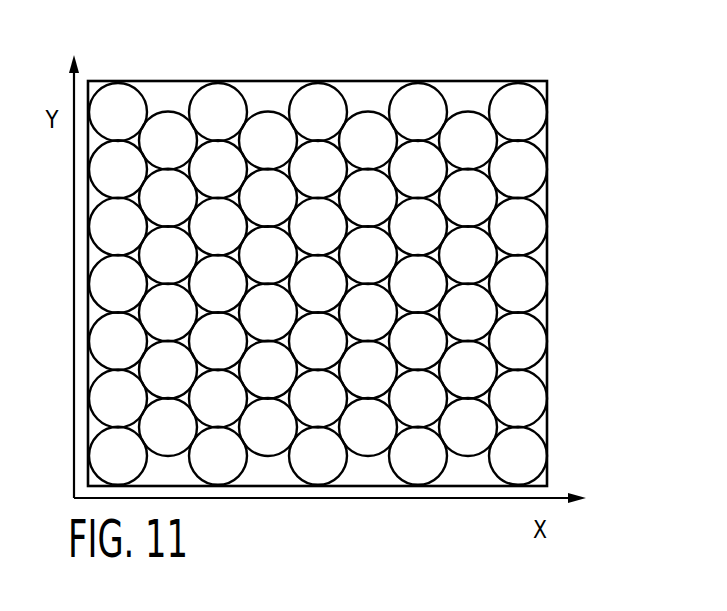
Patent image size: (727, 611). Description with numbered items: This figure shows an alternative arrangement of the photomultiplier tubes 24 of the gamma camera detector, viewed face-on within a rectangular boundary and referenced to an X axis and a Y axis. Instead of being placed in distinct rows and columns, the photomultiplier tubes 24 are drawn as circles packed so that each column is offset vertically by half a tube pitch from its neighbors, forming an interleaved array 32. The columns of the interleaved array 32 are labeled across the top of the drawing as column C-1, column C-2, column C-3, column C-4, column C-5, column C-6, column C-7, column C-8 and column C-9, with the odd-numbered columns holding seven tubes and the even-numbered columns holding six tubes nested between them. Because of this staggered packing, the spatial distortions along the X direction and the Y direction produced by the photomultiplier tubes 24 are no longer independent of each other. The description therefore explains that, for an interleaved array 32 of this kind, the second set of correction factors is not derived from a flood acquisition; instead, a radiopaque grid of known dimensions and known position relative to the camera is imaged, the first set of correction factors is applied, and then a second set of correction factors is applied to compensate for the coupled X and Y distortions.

The photomultiplier tubes 24 is at (357, 267).
The interleaved array 32 is at (563, 288).
The column C-1 of pixel elements 1 is at (118, 267).
The column C-2 of pixel elements 2 is at (168, 252).
The column C-3 of pixel elements 3 is at (218, 267).
The column C-4 of pixel elements 4 is at (268, 252).
The column C-5 of pixel elements 5 is at (318, 267).
The column C-6 of pixel elements 6 is at (368, 252).
The column C-7 of pixel elements 7 is at (418, 267).
The column C-8 of pixel elements 8 is at (468, 252).
The column C-9 of pixel elements 9 is at (512, 215).